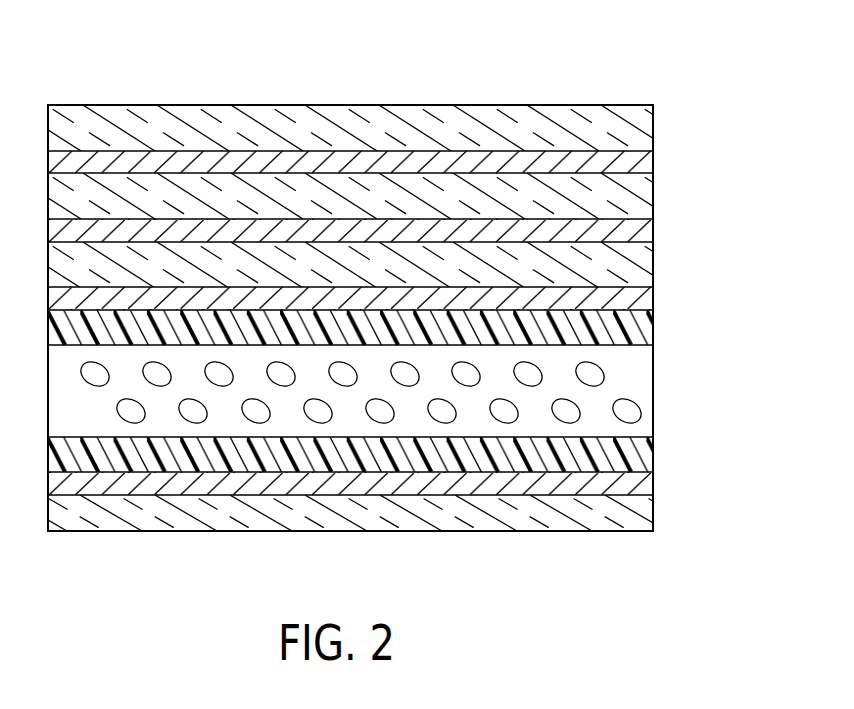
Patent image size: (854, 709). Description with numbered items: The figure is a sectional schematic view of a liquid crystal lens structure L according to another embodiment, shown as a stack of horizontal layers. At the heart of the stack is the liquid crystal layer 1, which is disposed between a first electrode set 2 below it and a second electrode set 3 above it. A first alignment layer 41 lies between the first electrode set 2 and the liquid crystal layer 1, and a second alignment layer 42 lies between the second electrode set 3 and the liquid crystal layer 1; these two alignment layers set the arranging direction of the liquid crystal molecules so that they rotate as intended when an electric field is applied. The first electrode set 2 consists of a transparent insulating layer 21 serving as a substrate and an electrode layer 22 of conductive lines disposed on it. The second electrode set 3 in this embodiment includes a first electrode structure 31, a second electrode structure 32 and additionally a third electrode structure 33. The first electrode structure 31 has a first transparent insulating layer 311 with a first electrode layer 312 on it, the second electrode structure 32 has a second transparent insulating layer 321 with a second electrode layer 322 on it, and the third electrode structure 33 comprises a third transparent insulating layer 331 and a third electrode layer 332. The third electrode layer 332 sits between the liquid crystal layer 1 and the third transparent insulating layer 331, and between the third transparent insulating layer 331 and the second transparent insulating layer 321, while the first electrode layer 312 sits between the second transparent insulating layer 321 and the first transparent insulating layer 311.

The liquid crystal lens structure L is at (697, 42).
The liquid crystal layer 1 is at (640, 376).
The first electrode set 2 is at (402, 502).
The transparent insulating layer 21 is at (386, 514).
The electrode layer 22 is at (640, 488).
The second electrode set 3 is at (436, 213).
The first electrode structure 31 is at (418, 144).
The first transparent insulating layer 311 is at (640, 128).
The first electrode layer 312 is at (640, 163).
The second electrode structure 32 is at (418, 213).
The second transparent insulating layer 321 is at (640, 200).
The second electrode layer 322 is at (640, 234).
The third electrode structure 33 is at (418, 282).
The third transparent insulating layer 331 is at (640, 268).
The third electrode layer 332 is at (640, 302).
The first alignment layer 41 is at (640, 455).
The second alignment layer 42 is at (640, 330).